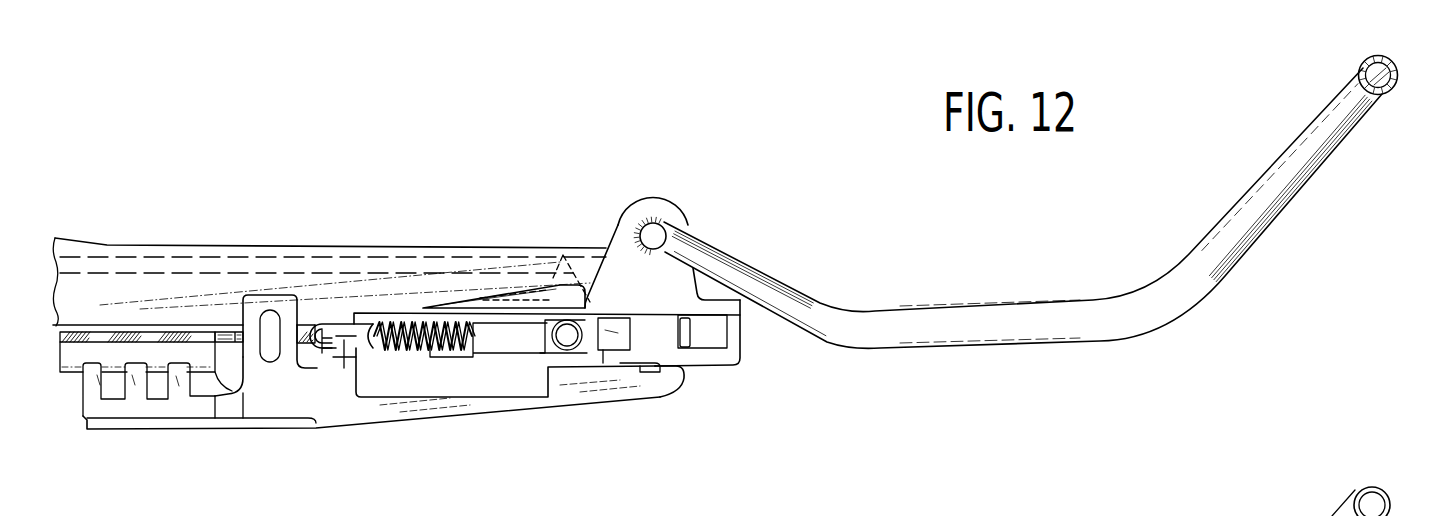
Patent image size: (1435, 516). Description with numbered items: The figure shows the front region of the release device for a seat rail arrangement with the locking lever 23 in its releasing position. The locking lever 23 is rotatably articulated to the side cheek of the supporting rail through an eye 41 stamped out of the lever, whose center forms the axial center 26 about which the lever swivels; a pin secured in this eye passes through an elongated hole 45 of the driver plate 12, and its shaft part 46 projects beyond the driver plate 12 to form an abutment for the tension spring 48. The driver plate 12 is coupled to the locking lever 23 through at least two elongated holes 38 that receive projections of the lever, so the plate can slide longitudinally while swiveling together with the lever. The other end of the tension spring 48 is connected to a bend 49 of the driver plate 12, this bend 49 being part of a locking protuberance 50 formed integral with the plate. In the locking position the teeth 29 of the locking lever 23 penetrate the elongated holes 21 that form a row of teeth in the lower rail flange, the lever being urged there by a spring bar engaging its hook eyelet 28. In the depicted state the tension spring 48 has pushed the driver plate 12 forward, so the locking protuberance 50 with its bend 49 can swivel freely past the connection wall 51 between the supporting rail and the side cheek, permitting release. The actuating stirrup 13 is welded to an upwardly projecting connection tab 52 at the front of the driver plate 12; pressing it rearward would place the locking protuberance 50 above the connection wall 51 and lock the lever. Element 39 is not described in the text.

The driver plate 12 is at (510, 360).
The actuating stirrup 13 is at (890, 327).
The elongated holes 21 is at (183, 334).
The locking lever 23 is at (380, 410).
The axial center 26 is at (575, 364).
The hook eyelet 28 is at (261, 300).
The teeth 29 is at (180, 371).
The elongated holes 38 is at (718, 350).
The bracket 39 is at (692, 348).
The eye 41 is at (593, 342).
The elongated hole 45 is at (613, 316).
The shaft part 46 is at (567, 335).
The tension spring 48 is at (403, 352).
The bend 49 is at (321, 353).
The locking protuberance 50 is at (350, 350).
The connection wall 51 is at (302, 333).
The connection tab 52 is at (663, 203).